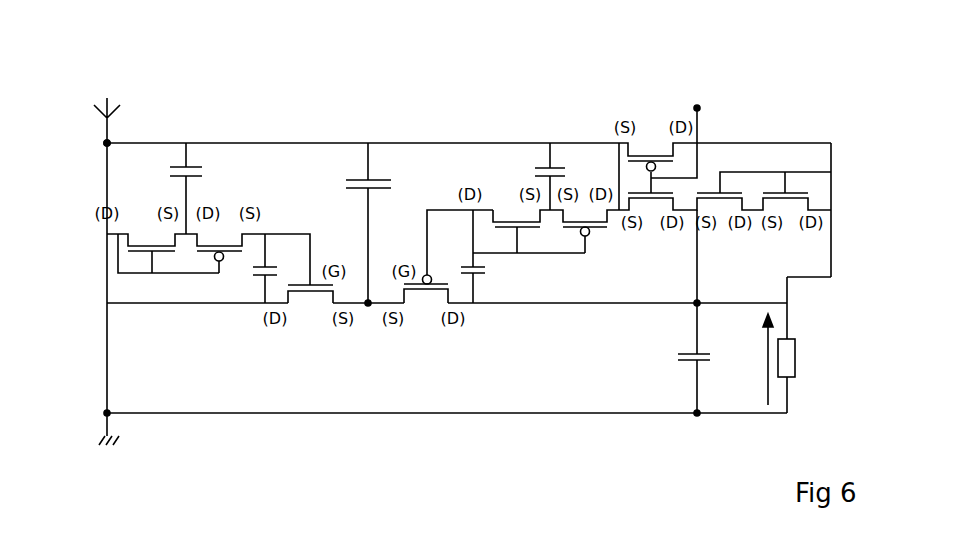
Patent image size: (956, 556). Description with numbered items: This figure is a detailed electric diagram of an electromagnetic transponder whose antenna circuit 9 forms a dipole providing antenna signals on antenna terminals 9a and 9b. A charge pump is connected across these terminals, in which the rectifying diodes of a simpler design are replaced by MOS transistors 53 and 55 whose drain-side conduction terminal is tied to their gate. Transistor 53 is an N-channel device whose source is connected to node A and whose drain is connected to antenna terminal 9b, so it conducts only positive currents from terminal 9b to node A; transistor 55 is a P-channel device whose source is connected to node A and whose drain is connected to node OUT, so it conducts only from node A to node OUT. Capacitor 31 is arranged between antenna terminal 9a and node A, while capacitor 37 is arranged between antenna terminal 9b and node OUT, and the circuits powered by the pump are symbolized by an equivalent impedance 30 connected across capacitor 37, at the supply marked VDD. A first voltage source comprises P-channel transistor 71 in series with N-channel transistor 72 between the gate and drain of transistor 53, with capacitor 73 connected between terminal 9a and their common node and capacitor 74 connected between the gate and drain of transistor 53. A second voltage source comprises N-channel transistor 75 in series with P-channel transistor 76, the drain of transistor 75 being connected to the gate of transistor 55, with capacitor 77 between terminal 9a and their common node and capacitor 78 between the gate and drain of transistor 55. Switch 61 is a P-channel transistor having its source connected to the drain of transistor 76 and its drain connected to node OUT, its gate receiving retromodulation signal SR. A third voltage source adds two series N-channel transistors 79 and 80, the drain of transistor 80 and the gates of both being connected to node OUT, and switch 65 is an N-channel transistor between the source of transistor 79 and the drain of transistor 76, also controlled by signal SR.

The antenna circuit 9 is at (104, 82).
The antenna terminal 9a is at (105, 143).
The antenna terminal 9b is at (104, 412).
The capacitor 73 is at (203, 174).
The N-channel MOS transistor 72 is at (152, 248).
The P-channel MOS transistor 71 is at (224, 247).
The capacitor 74 is at (272, 268).
The capacitor 31 is at (378, 180).
The N-channel MOS transistor 53 is at (310, 310).
The P-channel MOS transistor 55 is at (430, 310).
The capacitor 78 is at (485, 278).
The N-channel transistor 75 is at (511, 222).
The capacitor 77 is at (557, 165).
The P-channel MOS transistor 76 is at (592, 238).
The switch 61 is at (651, 155).
The switch 65 is at (656, 214).
The N-channel MOS transistor 79 is at (720, 198).
The N-channel MOS transistor 80 is at (783, 198).
The capacitor 37 is at (676, 358).
The equivalent impedance 30 is at (797, 355).
The node A is at (368, 308).
The retromodulation signal SR is at (701, 112).
The node OUT is at (699, 303).
The supply voltage VDD is at (775, 331).